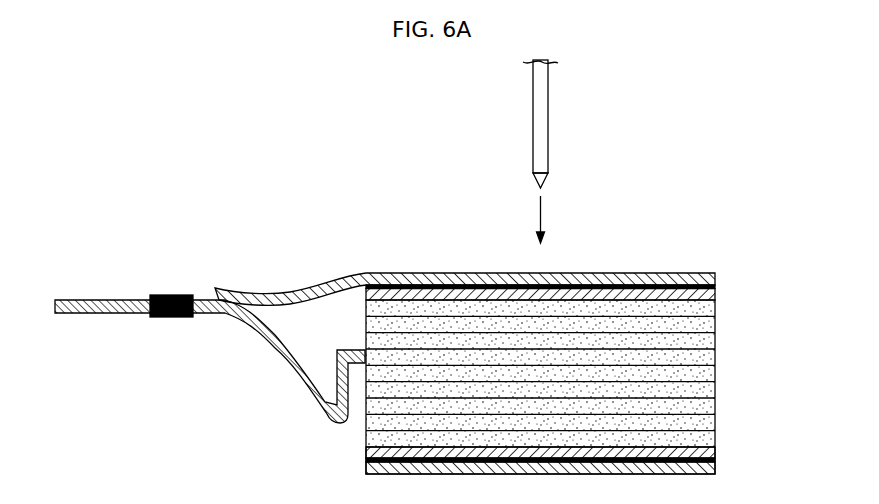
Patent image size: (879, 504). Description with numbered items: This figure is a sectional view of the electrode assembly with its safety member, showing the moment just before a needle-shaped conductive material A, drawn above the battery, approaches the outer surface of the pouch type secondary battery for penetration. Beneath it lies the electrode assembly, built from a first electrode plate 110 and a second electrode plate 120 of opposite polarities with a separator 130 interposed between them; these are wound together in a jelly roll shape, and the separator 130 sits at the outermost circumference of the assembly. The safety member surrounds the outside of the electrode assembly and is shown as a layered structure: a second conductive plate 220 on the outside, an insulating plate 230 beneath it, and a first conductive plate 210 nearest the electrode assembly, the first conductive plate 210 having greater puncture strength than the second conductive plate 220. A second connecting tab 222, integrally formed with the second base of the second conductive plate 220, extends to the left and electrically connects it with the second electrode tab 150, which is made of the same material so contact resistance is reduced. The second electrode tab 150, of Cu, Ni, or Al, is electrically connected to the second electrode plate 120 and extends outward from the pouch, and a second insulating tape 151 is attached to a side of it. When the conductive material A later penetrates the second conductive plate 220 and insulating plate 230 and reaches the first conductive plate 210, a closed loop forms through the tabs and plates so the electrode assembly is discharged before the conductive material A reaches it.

The conductive material A is at (548, 82).
The first electrode plate 110 is at (372, 323).
The second electrode plate 120 is at (397, 355).
The separator 130 is at (708, 340).
The second electrode tab 150 is at (83, 298).
The second insulating tape 151 is at (173, 294).
The first conductive plate 210 is at (726, 292).
The second conductive plate 220 is at (723, 268).
The second connecting tab 222 is at (228, 290).
The insulating plate 230 is at (725, 279).